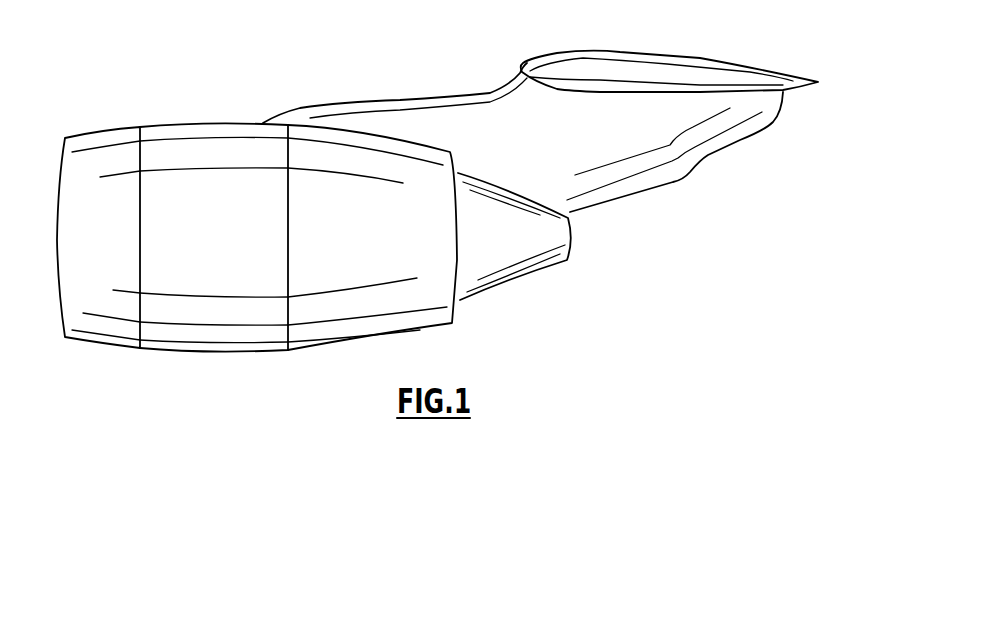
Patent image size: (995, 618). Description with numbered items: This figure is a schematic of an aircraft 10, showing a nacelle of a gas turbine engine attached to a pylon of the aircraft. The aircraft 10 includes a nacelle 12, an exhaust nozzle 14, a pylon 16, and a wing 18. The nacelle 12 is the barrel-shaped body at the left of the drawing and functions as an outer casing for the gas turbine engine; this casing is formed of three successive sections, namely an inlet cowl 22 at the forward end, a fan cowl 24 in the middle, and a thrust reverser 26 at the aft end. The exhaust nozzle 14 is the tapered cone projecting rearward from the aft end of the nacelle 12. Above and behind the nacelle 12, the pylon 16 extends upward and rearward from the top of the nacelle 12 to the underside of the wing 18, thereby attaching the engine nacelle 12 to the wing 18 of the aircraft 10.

The aircraft 10 is at (123, 63).
The nacelle 12 is at (214, 373).
The exhaust nozzle 14 is at (530, 263).
The pylon 16 is at (673, 158).
The wing 18 is at (642, 55).
The inlet cowl 22 is at (102, 142).
The fan cowl 24 is at (192, 133).
The thrust reverser 26 is at (370, 143).